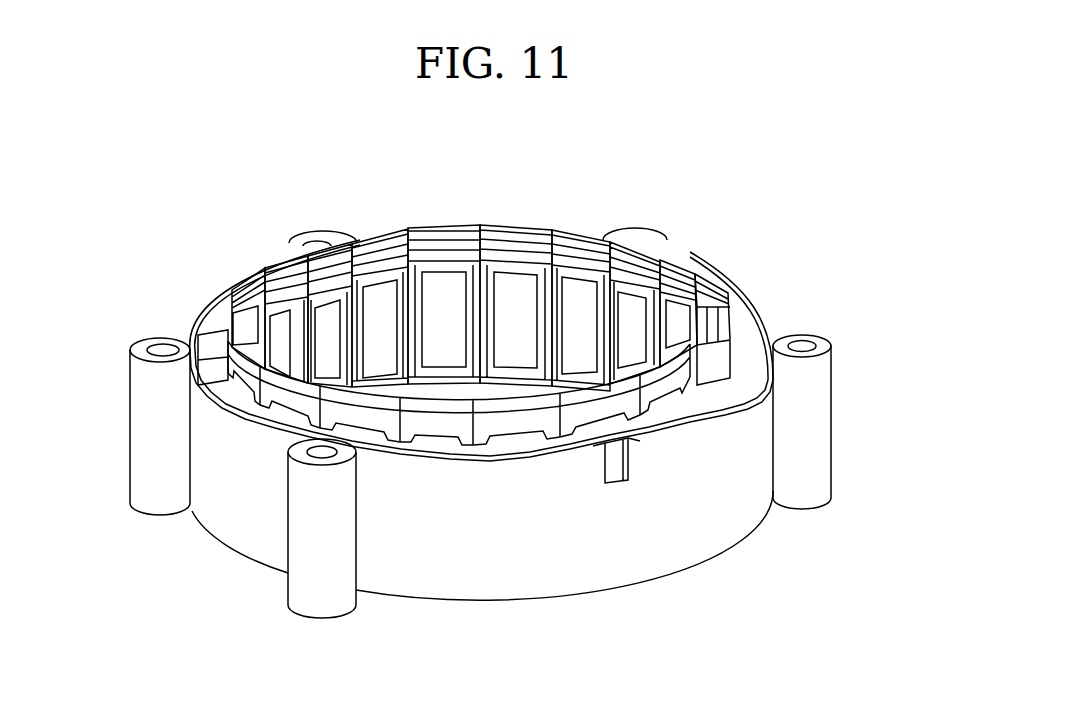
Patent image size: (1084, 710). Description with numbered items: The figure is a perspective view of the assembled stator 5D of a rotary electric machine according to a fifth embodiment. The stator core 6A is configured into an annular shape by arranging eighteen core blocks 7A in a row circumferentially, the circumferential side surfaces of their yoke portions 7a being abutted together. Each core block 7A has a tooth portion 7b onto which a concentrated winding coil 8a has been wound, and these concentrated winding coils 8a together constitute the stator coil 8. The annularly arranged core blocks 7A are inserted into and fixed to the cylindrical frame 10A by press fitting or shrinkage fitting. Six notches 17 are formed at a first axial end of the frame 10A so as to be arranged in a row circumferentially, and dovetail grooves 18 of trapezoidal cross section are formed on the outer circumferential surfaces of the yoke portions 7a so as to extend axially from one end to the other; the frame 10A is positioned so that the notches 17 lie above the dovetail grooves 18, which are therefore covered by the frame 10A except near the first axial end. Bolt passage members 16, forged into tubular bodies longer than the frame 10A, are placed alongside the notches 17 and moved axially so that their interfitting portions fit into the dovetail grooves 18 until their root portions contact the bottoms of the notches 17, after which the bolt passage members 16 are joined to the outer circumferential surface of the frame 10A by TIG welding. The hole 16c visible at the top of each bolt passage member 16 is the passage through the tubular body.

The stator 5D is at (182, 143).
The stator core 6A is at (733, 317).
The core block 7A is at (519, 458).
The yoke portion 7a is at (573, 437).
The tooth portion 7b is at (605, 431).
The stator coil 8 is at (683, 252).
The concentrated winding coil 8a is at (258, 290).
The frame 10A is at (237, 517).
The bolt passage member 16 is at (832, 345).
The boss hole 16c is at (802, 349).
The notch 17 is at (630, 483).
The dovetail groove 18 is at (627, 460).